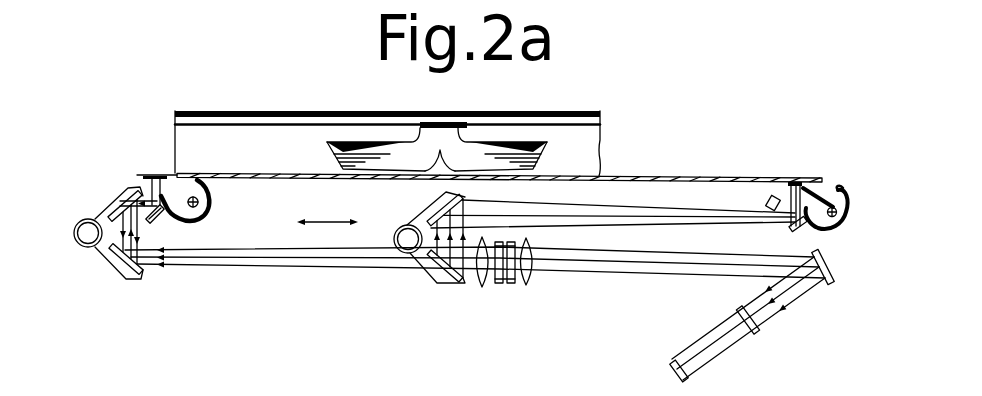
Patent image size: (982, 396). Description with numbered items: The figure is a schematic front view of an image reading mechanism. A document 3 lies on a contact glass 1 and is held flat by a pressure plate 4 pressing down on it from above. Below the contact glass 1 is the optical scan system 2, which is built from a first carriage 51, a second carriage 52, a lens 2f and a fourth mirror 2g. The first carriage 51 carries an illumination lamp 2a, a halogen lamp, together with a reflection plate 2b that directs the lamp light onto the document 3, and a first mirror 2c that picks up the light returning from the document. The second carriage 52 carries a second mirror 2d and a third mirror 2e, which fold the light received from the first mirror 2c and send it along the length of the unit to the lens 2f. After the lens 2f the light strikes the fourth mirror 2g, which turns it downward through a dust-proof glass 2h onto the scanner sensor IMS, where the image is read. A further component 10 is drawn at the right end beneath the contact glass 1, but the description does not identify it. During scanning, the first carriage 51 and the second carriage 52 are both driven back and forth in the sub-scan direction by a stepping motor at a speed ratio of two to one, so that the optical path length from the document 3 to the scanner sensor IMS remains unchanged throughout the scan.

The contact glass 1 is at (704, 173).
The optical scan system 2 is at (475, 184).
The document 3 is at (548, 152).
The pressure plate 4 is at (247, 109).
The lamp unit 10 is at (769, 199).
The first carriage 51 is at (163, 168).
The second carriage 52 is at (104, 282).
The illumination lamp 2a is at (200, 201).
The reflection plate 2b is at (200, 225).
The first mirror 2c is at (158, 222).
The second mirror 2d is at (113, 190).
The third mirror 2e is at (143, 275).
The lens 2f is at (504, 284).
The fourth mirror 2g is at (827, 284).
The dust-proof glass 2h is at (757, 334).
The scanner sensor IMS is at (670, 361).